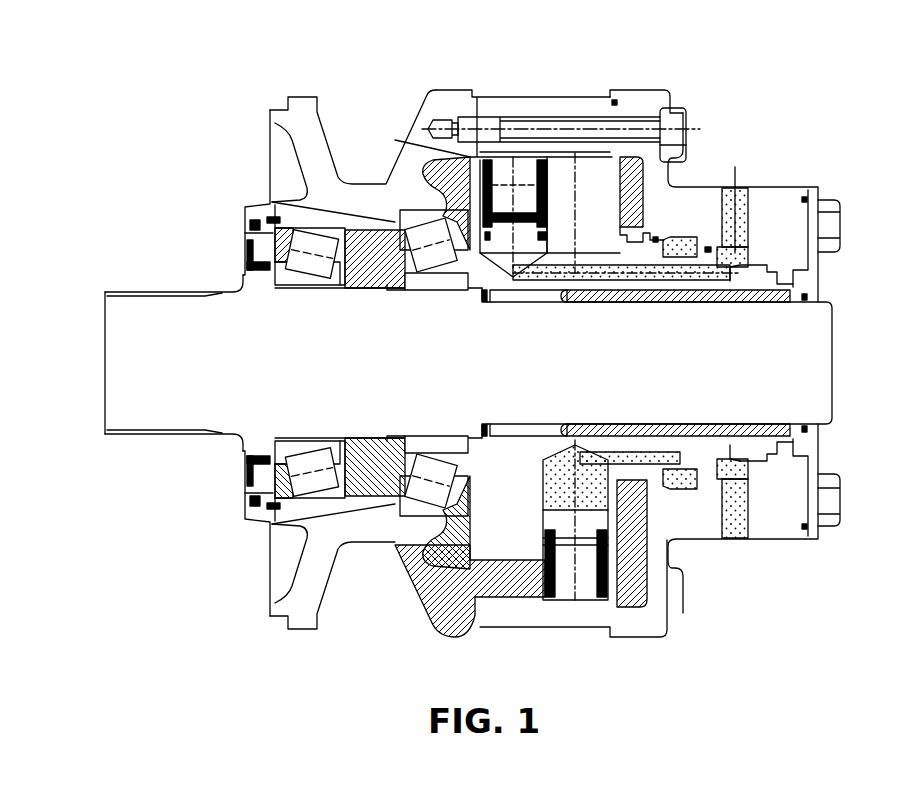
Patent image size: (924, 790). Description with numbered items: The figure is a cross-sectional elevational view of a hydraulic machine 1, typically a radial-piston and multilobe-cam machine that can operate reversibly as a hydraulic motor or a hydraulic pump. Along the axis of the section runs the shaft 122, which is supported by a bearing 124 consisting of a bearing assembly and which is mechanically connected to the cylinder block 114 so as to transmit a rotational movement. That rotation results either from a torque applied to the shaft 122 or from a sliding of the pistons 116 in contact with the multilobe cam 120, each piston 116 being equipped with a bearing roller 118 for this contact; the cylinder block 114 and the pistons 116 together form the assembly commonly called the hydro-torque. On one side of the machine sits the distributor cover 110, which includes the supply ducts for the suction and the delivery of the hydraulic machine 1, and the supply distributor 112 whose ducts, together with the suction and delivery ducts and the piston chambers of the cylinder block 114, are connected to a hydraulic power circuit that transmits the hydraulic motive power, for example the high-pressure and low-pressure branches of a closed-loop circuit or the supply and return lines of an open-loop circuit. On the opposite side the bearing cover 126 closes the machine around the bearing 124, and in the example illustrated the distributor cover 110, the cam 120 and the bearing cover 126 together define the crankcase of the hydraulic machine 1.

The hydraulic machine 1 is at (718, 115).
The distributor cover 110 is at (773, 228).
The supply distributor 112 is at (770, 277).
The cylinder block 114 is at (557, 170).
The pistons 116 is at (547, 233).
The bearing roller 118 is at (480, 160).
The multilobe cam 120 is at (500, 150).
The shaft 122 is at (183, 362).
The bearing 124 is at (423, 237).
The bearing cover 126 is at (330, 190).